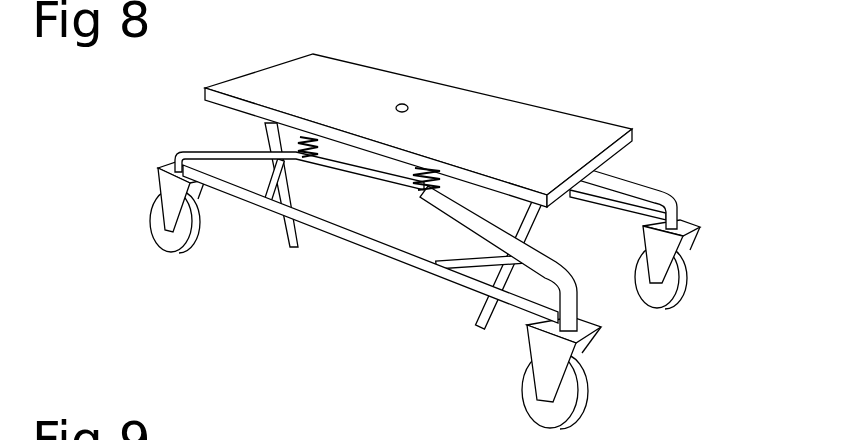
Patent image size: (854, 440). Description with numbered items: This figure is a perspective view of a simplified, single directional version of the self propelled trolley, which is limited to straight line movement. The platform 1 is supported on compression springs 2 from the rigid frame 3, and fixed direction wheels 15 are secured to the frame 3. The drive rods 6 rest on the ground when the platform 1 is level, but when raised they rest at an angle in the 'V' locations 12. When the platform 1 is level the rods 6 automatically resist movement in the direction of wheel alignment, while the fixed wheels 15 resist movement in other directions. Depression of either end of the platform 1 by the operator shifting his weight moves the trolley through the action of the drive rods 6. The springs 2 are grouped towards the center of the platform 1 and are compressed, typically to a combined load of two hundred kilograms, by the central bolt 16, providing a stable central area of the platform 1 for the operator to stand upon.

The platform 1 is at (462, 107).
The compression springs 2 is at (423, 190).
The rigid frame 3 is at (640, 173).
The drive rods 6 is at (478, 313).
The 'V' locations 12 is at (486, 259).
The fixed direction wheels 15 is at (572, 398).
The central bolt 16 is at (410, 100).